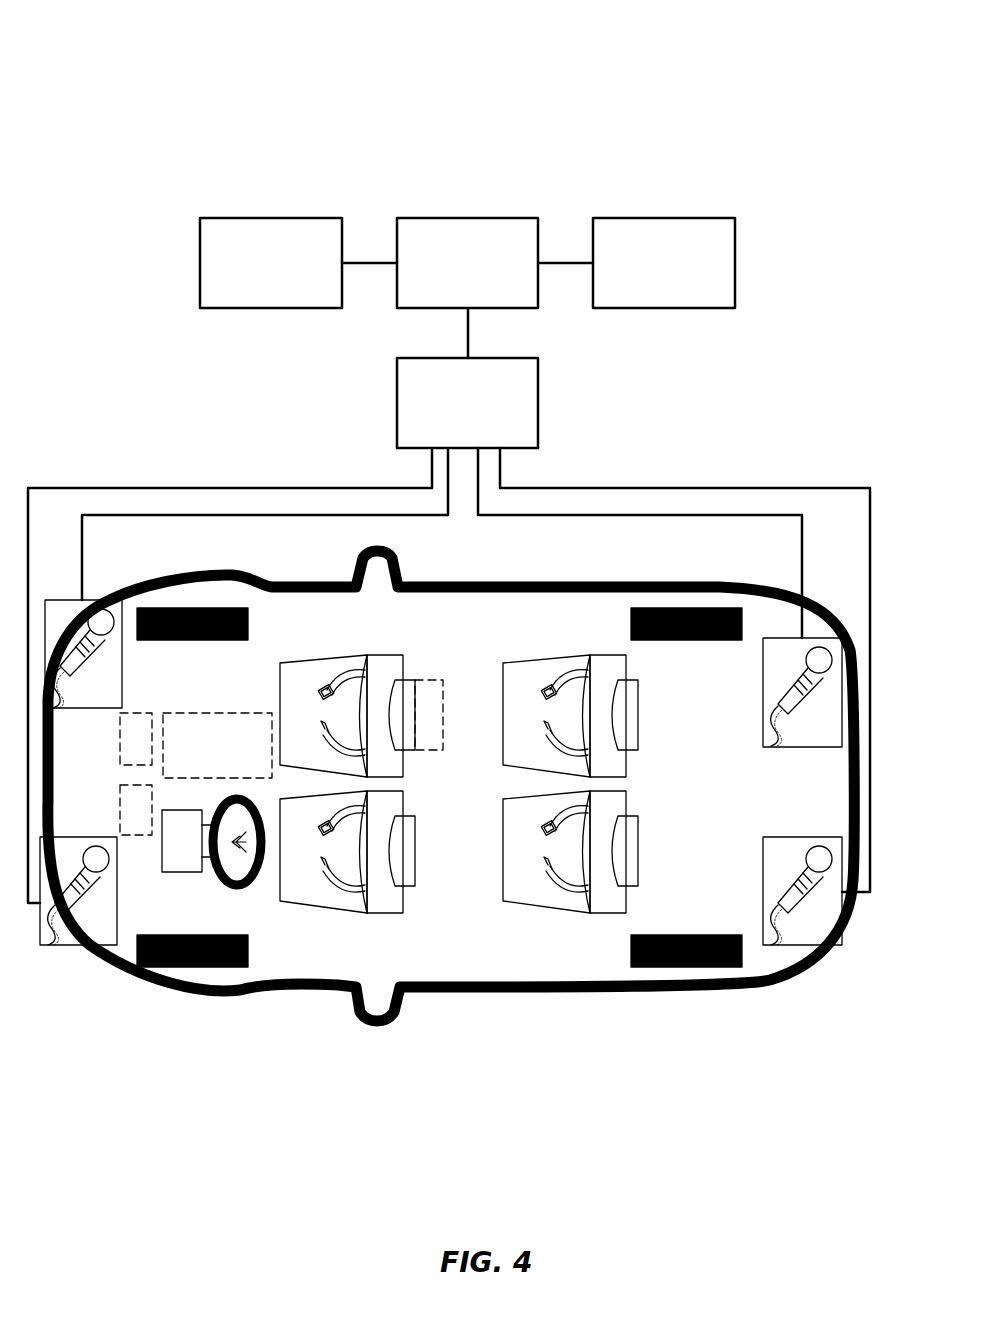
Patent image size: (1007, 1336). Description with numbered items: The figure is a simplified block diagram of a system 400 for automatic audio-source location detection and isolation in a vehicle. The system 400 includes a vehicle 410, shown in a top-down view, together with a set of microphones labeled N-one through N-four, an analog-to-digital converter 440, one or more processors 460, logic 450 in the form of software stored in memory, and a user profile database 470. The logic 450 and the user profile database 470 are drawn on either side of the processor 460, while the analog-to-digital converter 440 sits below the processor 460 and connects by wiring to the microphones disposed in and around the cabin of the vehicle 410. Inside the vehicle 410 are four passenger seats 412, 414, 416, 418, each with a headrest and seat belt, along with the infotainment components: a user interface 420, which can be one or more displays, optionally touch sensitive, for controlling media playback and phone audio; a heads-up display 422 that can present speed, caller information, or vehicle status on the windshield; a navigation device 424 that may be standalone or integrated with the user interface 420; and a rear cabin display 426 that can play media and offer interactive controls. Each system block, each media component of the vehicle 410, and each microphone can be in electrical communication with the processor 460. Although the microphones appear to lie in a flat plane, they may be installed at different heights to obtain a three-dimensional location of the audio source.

The system 400 is at (232, 52).
The vehicle 410 is at (447, 786).
The passenger seat 412 is at (403, 913).
The passenger seat 414 is at (403, 660).
The passenger seat 416 is at (637, 715).
The passenger seat 418 is at (637, 848).
The user interface 420 is at (217, 745).
The heads-up display (HUD) 422 is at (120, 720).
The navigation device (GPS) 424 is at (120, 808).
The rear cabin display 426 is at (443, 750).
The analog-to-digital converter (A/D) 440 is at (538, 410).
The logic 450 is at (200, 252).
The processor 460 is at (468, 218).
The user profile database 470 is at (735, 262).